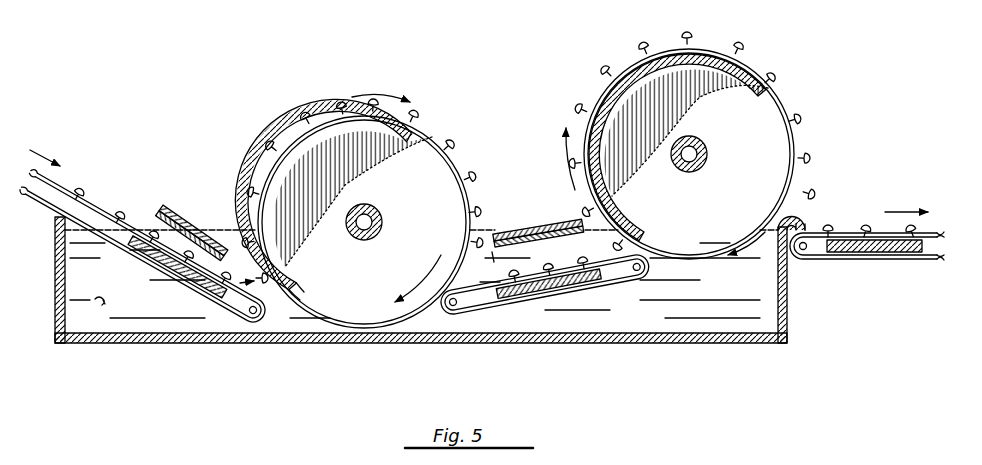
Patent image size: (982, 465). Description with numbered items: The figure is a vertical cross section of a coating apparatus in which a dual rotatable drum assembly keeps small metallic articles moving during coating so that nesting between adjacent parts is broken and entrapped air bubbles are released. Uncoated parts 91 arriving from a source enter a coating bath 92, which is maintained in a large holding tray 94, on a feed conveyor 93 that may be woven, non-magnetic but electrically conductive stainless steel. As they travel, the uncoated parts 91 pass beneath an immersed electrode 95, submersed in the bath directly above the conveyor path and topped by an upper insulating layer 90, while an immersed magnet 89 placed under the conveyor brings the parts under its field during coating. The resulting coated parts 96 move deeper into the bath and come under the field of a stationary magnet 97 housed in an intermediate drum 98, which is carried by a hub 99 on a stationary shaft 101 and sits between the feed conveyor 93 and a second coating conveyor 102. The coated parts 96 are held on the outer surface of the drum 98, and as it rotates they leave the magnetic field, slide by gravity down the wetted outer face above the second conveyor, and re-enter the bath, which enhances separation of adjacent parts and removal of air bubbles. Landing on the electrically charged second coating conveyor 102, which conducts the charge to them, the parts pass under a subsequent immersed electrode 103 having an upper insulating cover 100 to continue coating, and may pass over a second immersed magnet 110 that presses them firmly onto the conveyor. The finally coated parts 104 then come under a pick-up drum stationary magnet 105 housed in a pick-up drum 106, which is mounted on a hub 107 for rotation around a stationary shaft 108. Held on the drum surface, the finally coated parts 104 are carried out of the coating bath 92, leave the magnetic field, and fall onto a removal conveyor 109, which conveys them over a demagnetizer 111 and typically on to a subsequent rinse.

The immersed magnet 89 is at (190, 282).
The upper insulating layer 90 is at (172, 202).
The uncoated parts 91 is at (178, 267).
The coating bath 92 is at (97, 305).
The feed conveyor 93 is at (232, 318).
The holding tray 94 is at (312, 345).
The immersed electrode 95 is at (157, 222).
The coated parts 96 is at (450, 152).
The stationary magnet 97 is at (297, 284).
The intermediate drum 98 is at (349, 202).
The hub 99 is at (377, 212).
The upper insulating cover 100 is at (571, 237).
The stationary shaft 101 is at (382, 228).
The second coating conveyor 102 is at (564, 326).
The subsequent immersed electrode 103 is at (494, 254).
The finally coated parts 104 is at (590, 108).
The pick-up drum stationary magnet 105 is at (644, 228).
The pick-up drum 106 is at (712, 154).
The hub 107 is at (702, 140).
The stationary shaft 108 is at (703, 164).
The removal conveyor 109 is at (867, 257).
The second immersed magnet 110 is at (520, 297).
The demagnetizer 111 is at (878, 253).